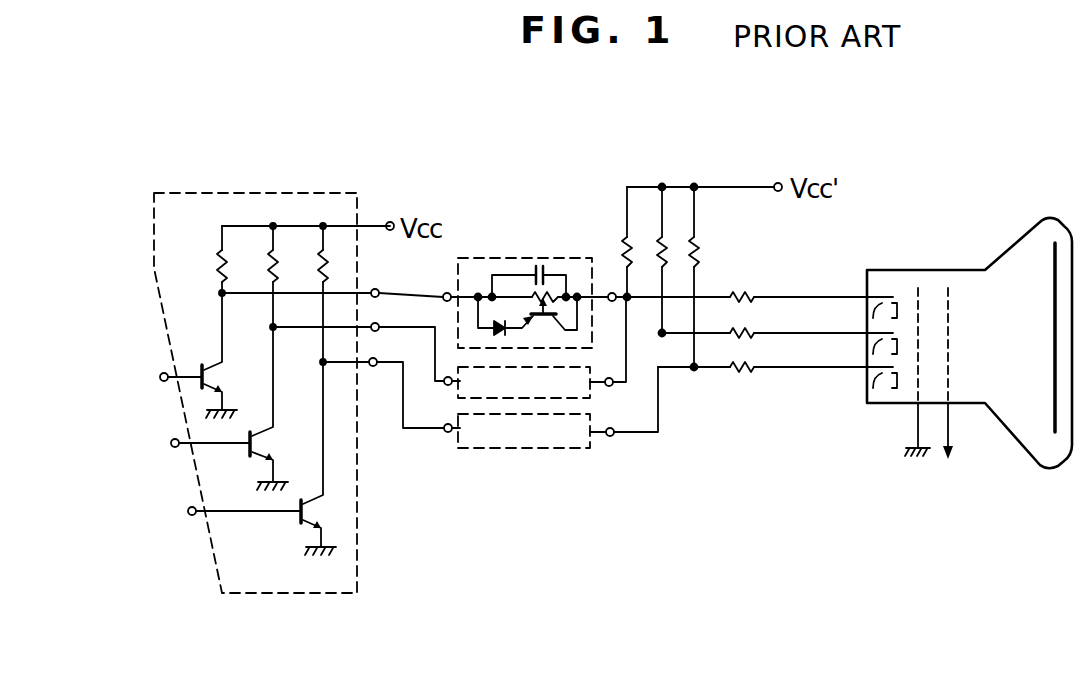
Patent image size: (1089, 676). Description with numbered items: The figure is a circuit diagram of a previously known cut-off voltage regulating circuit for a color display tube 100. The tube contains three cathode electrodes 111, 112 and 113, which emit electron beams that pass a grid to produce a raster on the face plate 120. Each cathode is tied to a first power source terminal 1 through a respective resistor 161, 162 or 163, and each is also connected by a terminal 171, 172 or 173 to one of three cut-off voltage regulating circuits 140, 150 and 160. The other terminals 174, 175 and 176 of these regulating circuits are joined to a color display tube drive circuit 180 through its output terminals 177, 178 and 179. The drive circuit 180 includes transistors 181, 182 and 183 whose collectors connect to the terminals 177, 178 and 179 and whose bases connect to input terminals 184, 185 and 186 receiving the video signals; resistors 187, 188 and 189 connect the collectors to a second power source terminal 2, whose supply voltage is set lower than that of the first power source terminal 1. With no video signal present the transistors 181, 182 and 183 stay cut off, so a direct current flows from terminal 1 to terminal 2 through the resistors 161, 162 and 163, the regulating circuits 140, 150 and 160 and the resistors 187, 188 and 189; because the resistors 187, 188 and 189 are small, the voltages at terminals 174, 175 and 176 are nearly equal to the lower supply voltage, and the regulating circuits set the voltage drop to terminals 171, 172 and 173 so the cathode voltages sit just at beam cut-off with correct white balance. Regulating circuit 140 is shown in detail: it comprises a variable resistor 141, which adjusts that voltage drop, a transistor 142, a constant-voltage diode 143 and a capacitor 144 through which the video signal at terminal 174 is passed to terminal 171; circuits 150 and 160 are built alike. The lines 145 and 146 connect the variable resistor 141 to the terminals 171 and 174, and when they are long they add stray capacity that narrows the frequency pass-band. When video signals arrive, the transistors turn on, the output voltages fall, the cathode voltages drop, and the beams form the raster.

The power source terminal 1 is at (779, 183).
The power source terminal 2 is at (391, 221).
The color display tube 100 is at (930, 270).
The cathode electrode 111 is at (868, 313).
The cathode electrode 112 is at (868, 348).
The cathode electrode 113 is at (868, 382).
The face plate 120 is at (1052, 345).
The cut-off voltage regulating circuit 140 is at (528, 258).
The variable resistor 141 is at (536, 293).
The transistor 142 is at (543, 328).
The constant-voltage diode 143 is at (498, 340).
The capacitor 144 is at (548, 268).
The line 145 is at (512, 302).
The line 146 is at (565, 303).
The cut-off voltage regulating circuit 150 is at (590, 398).
The cut-off voltage regulating circuit 160 is at (500, 448).
The resistor 161 is at (632, 236).
The resistor 162 is at (665, 245).
The resistor 163 is at (705, 253).
The terminal 171 is at (611, 293).
The terminal 172 is at (611, 387).
The terminal 173 is at (613, 436).
The terminal 174 is at (447, 293).
The terminal 175 is at (448, 386).
The terminal 176 is at (448, 433).
The terminal 177 is at (370, 297).
The terminal 178 is at (370, 330).
The terminal 179 is at (372, 368).
The color display tube drive circuit 180 is at (284, 192).
The transistor 181 is at (242, 366).
The transistor 182 is at (265, 453).
The transistor 183 is at (303, 530).
The input terminal 184 is at (160, 377).
The input terminal 185 is at (171, 443).
The input terminal 186 is at (188, 511).
The resistor 187 is at (247, 260).
The resistor 188 is at (296, 258).
The resistor 189 is at (332, 268).